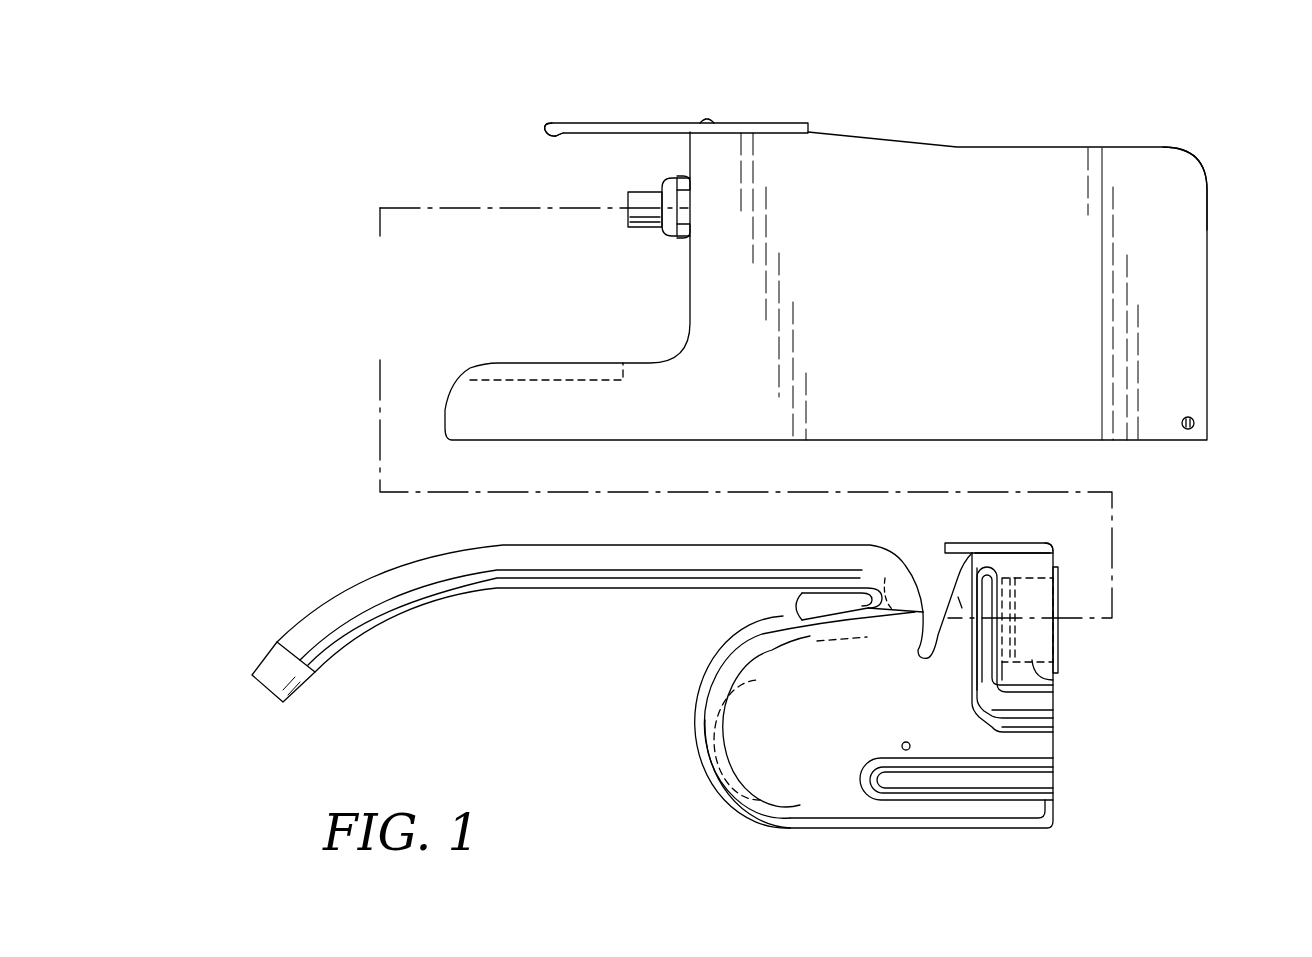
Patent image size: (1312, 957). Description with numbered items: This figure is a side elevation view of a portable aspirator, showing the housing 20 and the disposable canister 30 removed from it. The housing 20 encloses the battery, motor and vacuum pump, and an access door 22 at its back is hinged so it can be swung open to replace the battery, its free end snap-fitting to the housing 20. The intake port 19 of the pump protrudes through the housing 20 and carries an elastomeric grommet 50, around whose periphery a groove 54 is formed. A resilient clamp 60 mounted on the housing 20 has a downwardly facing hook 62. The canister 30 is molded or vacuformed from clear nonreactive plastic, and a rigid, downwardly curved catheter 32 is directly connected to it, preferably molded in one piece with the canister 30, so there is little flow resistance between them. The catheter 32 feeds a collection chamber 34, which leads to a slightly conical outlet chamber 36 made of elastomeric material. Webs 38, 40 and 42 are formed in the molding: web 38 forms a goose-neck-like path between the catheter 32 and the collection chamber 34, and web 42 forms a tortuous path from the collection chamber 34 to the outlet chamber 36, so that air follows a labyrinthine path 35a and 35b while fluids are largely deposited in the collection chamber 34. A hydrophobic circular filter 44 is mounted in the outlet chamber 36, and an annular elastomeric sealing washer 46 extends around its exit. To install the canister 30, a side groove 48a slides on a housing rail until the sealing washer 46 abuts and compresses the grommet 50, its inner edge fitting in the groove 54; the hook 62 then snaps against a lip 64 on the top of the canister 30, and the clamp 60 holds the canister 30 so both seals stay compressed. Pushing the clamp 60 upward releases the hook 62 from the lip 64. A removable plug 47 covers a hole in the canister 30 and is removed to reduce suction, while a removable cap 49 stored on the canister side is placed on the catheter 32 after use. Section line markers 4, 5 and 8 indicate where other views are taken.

The section line 4- 4 is at (1200, 840).
The section line 5- 5 is at (292, 530).
The section line 8- 8 is at (1288, 450).
The intake port 19 is at (632, 227).
The housing 20 is at (853, 138).
The access door 22 is at (1133, 145).
The disposable canister 30 is at (666, 714).
The catheter 32 is at (322, 600).
The collection chamber 34 is at (735, 780).
The labyrinthine path 35a is at (1035, 563).
The labyrinthine path 35b is at (1058, 545).
The outlet chamber 36 is at (1055, 680).
The web 38 is at (932, 570).
The web 40 is at (818, 607).
The web 42 is at (985, 598).
The filter 44 is at (1015, 640).
The sealing washer 46 is at (1058, 665).
The removable plug 47 is at (903, 750).
The side groove 48a is at (1005, 780).
The removable cap 49 is at (313, 702).
The grommet 50 is at (664, 182).
The groove 54 is at (680, 176).
The resilient clamp 60 is at (598, 123).
The hook 62 is at (545, 129).
The lip 64 is at (950, 553).